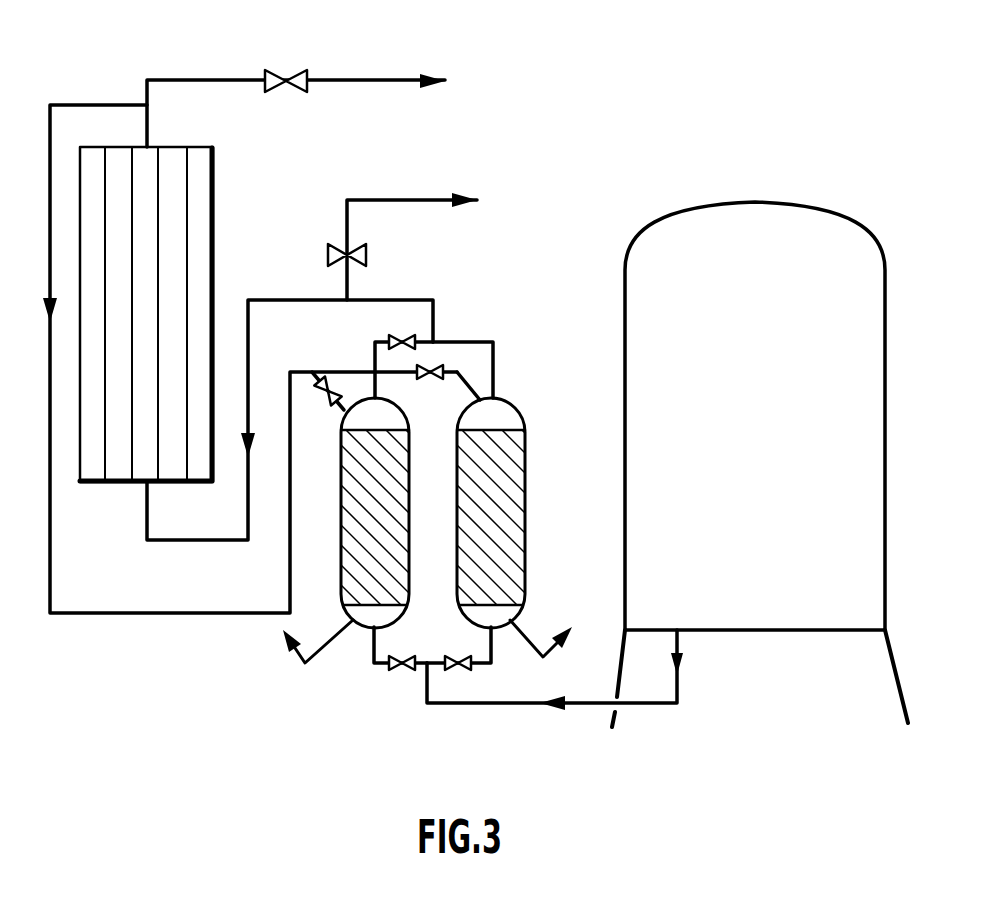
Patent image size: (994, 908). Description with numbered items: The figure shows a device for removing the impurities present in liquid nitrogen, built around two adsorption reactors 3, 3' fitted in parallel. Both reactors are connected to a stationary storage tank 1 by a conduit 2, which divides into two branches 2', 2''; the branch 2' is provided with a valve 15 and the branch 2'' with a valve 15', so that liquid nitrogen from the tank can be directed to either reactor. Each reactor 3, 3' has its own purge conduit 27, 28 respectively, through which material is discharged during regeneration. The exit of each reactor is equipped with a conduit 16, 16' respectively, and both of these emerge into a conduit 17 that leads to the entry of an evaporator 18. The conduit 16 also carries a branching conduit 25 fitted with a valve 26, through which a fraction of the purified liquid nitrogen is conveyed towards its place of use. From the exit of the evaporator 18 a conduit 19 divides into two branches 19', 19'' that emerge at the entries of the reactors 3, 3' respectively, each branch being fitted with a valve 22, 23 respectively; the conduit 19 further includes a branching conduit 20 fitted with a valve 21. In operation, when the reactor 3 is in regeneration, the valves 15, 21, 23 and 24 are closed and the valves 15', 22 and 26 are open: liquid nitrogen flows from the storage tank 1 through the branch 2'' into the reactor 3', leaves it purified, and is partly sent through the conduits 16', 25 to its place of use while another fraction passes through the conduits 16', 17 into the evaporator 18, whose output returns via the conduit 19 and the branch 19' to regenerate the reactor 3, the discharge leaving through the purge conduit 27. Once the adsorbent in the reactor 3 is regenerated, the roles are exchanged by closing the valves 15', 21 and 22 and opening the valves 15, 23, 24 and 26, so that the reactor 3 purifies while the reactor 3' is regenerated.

The stationary storage tank 1 is at (625, 343).
The conduit 2 is at (555, 695).
The branch 2' is at (387, 674).
The branch 2'' is at (456, 633).
The reactor 3 is at (373, 559).
The reactor 3' is at (489, 513).
The valve 15 is at (398, 692).
The valve 15' is at (477, 678).
The conduit 16 is at (367, 360).
The conduit 16' is at (473, 339).
The conduit 17 is at (173, 542).
The evaporator 18 is at (214, 208).
The conduit 19 is at (250, 359).
The branch 19' is at (325, 425).
The branch 19'' is at (449, 413).
The branching conduit 20 is at (230, 80).
The valve 21 is at (294, 70).
The valve 22 is at (327, 394).
The valve 23 is at (438, 381).
The valve 24 is at (388, 336).
The branching conduit 25 is at (350, 232).
The valve 26 is at (340, 258).
The purge conduit 27 is at (305, 657).
The purge conduit 28 is at (548, 645).